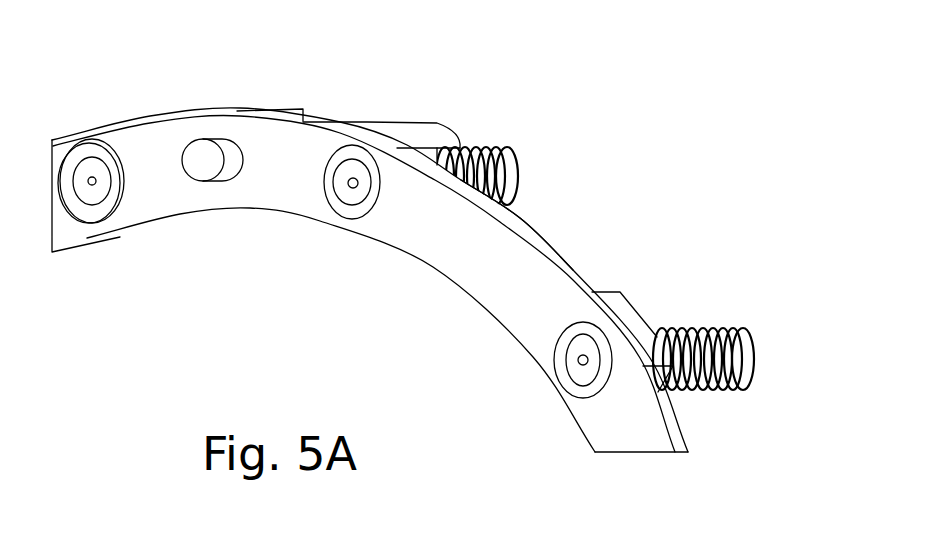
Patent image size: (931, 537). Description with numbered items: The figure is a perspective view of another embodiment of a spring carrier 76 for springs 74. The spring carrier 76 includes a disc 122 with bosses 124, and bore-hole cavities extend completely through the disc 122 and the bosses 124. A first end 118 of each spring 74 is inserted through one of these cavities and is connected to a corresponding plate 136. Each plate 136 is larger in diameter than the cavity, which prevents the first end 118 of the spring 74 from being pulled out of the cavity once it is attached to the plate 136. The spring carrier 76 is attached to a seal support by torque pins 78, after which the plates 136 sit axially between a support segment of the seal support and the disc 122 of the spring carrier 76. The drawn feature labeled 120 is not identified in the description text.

The spring carrier 76 is at (150, 138).
The torque pin 78 is at (433, 132).
The spring 74 is at (503, 145).
The spring end 120 is at (520, 177).
The disc 122 is at (500, 247).
The boss 124 is at (367, 128).
The plate 136 is at (95, 204).
The first end 118 is at (352, 184).